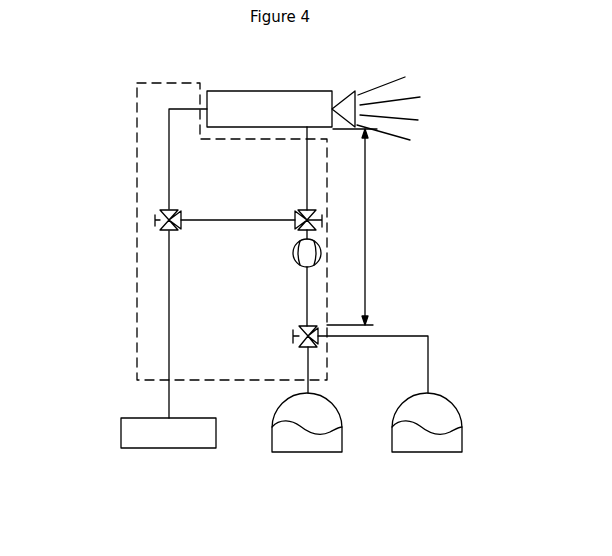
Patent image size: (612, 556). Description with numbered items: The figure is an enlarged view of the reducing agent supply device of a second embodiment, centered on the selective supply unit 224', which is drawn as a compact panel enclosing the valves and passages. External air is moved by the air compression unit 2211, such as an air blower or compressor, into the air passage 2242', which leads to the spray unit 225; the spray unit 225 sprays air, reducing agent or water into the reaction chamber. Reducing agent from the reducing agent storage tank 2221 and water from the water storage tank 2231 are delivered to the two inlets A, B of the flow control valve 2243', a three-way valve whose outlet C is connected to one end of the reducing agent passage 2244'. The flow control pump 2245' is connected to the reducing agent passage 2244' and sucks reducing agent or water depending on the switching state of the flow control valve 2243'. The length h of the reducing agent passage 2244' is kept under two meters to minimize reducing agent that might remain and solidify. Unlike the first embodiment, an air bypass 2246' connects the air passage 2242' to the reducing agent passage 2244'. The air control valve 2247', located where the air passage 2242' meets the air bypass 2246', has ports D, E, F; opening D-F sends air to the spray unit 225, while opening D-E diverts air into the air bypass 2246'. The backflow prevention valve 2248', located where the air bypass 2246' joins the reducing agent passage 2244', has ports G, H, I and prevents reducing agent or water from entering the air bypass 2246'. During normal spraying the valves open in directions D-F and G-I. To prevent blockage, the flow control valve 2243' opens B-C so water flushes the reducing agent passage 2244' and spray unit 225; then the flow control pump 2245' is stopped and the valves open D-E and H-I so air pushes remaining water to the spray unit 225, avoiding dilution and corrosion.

The selective supply unit 224' is at (194, 217).
The air passage 2242' is at (133, 261).
The spray unit 225 is at (233, 100).
The reducing agent passage 2244' is at (377, 168).
The length of the reducing agent passage h is at (366, 193).
The air control valve 2247' is at (143, 247).
The air bypass 2246' is at (238, 262).
The backflow prevention valve 2248' is at (404, 195).
The flow control pump 2245' is at (375, 278).
The flow control valve 2243' is at (259, 414).
The reducing agent storage tank 2221 is at (330, 449).
The water storage tank 2231 is at (457, 443).
The air compression unit 2211 is at (121, 418).
The inlet of the flow control valve A is at (312, 346).
The inlet of the flow control valve B is at (319, 336).
The outlet of the flow control valve C is at (300, 328).
The port of the air control valve D is at (175, 227).
The port of the air control valve E is at (183, 217).
The port of the air control valve F is at (164, 212).
The port of the backflow prevention valve G is at (311, 232).
The port of the backflow prevention valve H is at (300, 213).
The port of the backflow prevention valve I is at (319, 216).